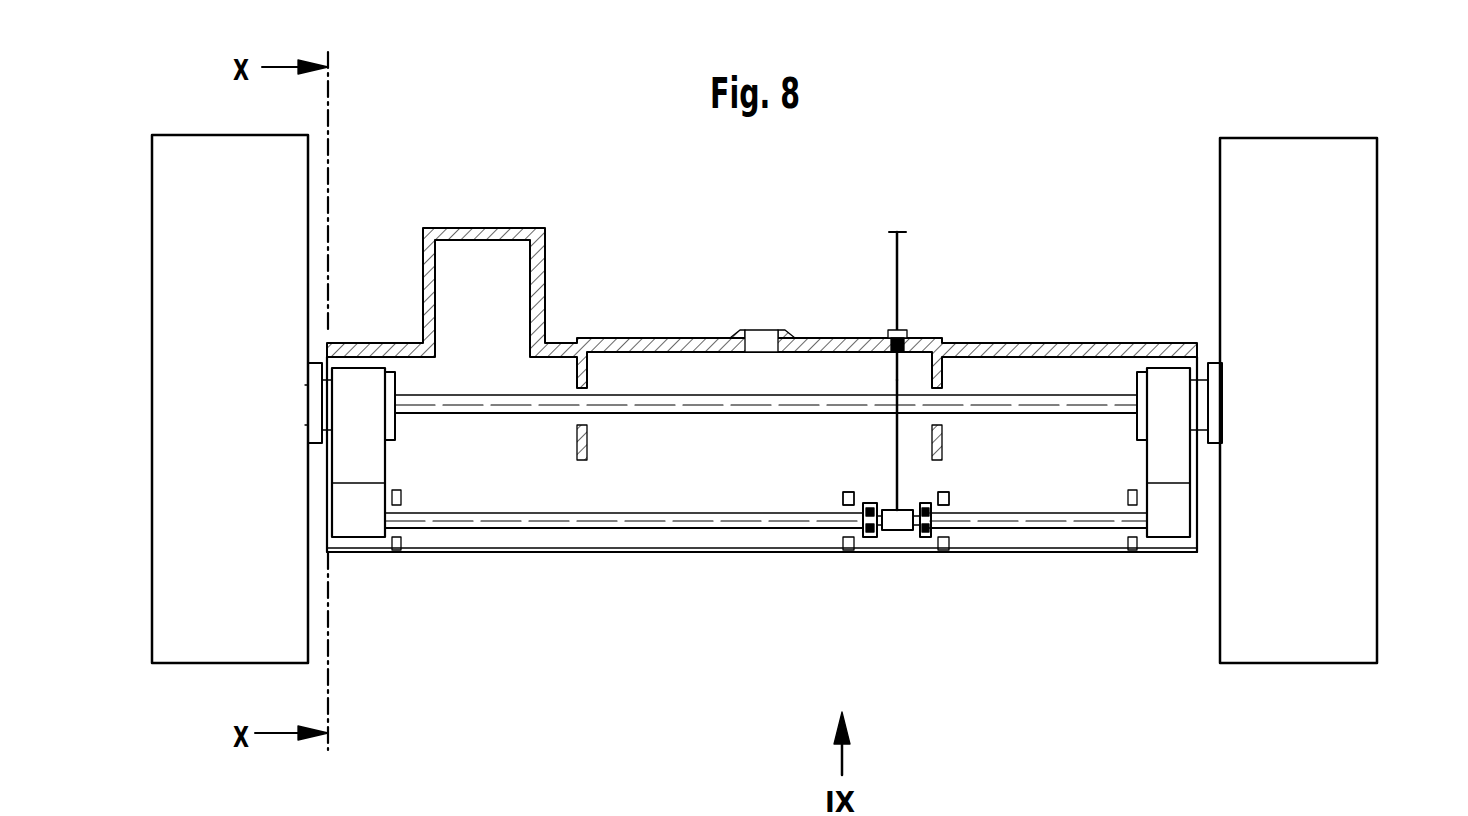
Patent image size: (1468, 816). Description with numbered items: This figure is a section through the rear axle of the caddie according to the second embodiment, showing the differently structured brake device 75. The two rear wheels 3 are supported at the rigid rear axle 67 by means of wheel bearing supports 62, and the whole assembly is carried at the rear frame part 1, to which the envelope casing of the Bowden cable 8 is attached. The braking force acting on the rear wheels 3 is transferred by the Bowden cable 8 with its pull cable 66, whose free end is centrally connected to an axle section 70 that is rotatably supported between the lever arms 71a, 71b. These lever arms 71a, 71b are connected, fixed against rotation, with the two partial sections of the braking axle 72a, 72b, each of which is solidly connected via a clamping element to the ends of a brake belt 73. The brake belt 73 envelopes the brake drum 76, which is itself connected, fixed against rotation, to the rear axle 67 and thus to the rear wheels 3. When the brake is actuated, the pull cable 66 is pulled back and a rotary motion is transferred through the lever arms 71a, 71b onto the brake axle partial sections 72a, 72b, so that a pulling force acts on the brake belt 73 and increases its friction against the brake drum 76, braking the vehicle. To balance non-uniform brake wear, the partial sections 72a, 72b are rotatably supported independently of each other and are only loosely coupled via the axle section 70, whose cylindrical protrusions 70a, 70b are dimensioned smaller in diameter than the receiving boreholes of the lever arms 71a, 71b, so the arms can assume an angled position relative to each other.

The rear frame part 1 is at (555, 198).
The rear wheels 3 is at (167, 209).
The Bowden cable 8 is at (918, 240).
The wheel bearing supports 62 is at (1215, 367).
The pull cable 66 is at (895, 375).
The rear axle 67 is at (650, 400).
The axle section 70 is at (900, 535).
The cylindrical protrusion 70a is at (880, 506).
The cylindrical protrusion 70b is at (920, 506).
The lever arm 71a is at (870, 542).
The lever arm 71b is at (928, 542).
The brake axle partial section 72a is at (622, 524).
The brake axle partial section 72b is at (1080, 524).
The brake belt 73 is at (362, 392).
The brake device 75 is at (910, 442).
The brake drum 76 is at (395, 380).